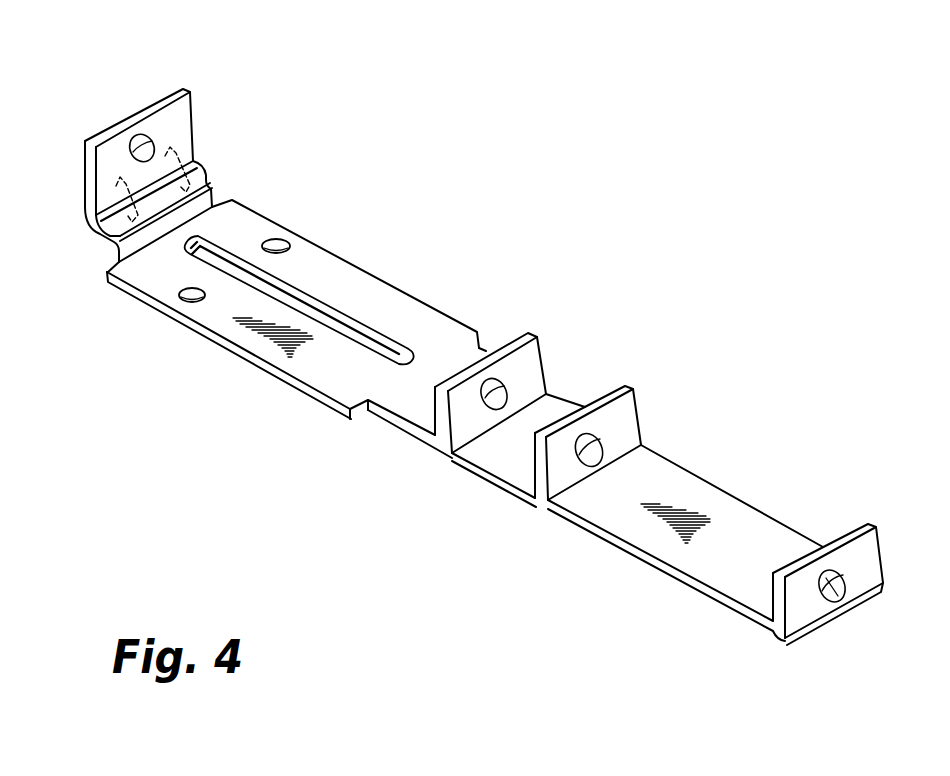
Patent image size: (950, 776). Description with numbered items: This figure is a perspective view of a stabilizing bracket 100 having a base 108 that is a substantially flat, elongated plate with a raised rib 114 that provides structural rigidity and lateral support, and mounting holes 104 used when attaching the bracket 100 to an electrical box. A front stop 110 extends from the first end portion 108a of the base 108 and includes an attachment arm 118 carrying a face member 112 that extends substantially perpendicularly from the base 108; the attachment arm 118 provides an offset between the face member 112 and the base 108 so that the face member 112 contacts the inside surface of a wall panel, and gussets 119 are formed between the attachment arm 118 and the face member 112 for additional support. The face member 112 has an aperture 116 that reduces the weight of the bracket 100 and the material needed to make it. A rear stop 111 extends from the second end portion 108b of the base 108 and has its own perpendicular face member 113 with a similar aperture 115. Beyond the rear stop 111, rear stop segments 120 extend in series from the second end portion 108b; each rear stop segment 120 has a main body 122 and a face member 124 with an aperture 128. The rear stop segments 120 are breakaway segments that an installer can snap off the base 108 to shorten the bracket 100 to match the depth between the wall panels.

The bracket 100 is at (527, 148).
The mounting holes 104 is at (278, 238).
The base 108 is at (403, 284).
The first end portion 108a is at (240, 217).
The second end portion 108b is at (404, 409).
The front stop 110 is at (101, 122).
The rear stop 111 is at (453, 367).
The face member 112 is at (82, 146).
The face member 113 is at (533, 352).
The raised ribs 114 is at (326, 310).
The aperture 115 is at (503, 384).
The aperture 116 is at (148, 133).
The attachment arm 118 is at (115, 226).
The gussets 119 is at (175, 146).
The rear stop segments 120 is at (563, 398).
The main body 122 is at (500, 468).
The face member 124 is at (625, 425).
The aperture 128 is at (593, 436).